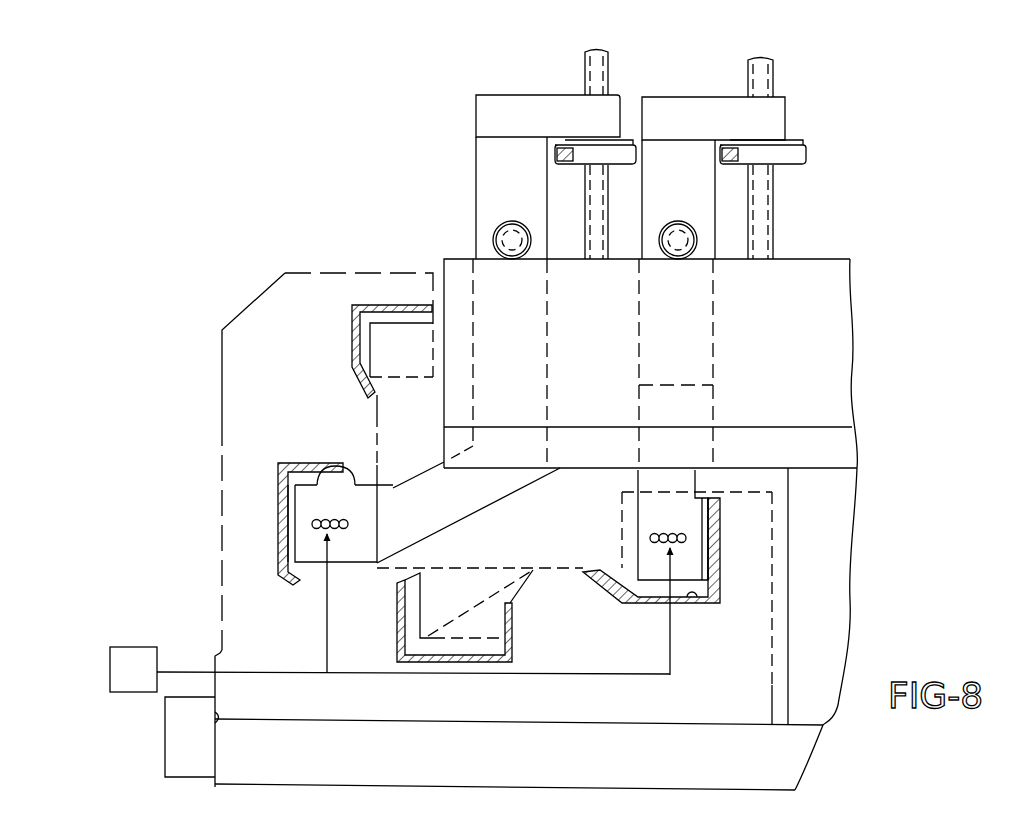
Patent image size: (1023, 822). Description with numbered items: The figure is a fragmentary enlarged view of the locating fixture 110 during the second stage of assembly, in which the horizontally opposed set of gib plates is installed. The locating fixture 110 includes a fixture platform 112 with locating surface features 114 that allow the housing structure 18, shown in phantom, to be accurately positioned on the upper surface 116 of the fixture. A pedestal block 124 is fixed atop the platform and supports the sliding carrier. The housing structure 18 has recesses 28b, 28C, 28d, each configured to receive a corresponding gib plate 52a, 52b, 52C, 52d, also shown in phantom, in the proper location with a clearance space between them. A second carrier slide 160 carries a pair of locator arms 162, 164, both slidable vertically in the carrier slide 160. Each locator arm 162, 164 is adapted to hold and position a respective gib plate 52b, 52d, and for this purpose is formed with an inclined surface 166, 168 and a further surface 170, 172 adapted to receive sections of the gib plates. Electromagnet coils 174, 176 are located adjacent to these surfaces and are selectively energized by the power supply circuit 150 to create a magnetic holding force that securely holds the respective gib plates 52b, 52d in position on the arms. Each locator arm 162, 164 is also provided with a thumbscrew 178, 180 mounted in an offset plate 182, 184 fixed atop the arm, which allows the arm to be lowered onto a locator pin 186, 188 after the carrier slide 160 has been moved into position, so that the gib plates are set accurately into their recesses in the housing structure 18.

The housing structure 18 is at (255, 300).
The recess 28b is at (283, 478).
The recess 28C is at (360, 343).
The recess 28d is at (692, 600).
The gib plate 52a is at (470, 613).
The gib plate 52b is at (283, 460).
The gib plate 52C is at (380, 306).
The gib plate 52d is at (660, 588).
The locating fixture 110 is at (285, 795).
The fixture platform 112 is at (445, 789).
The locating surface features 114 is at (218, 715).
The upper surface 116 is at (400, 720).
The pedestal block 124 is at (830, 569).
The power supply circuit 150 is at (195, 613).
The second carrier slide 160 is at (808, 272).
The locator arm 162 is at (480, 150).
The locator arm 164 is at (705, 230).
The inclined surface 166 is at (293, 522).
The inclined surface 168 is at (716, 528).
The surface 170 is at (320, 468).
The surface 172 is at (665, 578).
The electromagnet coil 174 is at (357, 517).
The electromagnet coil 176 is at (650, 532).
The thumbscrew 178 is at (625, 141).
The thumbscrew 180 is at (805, 151).
The offset plate 182 is at (497, 102).
The offset plate 184 is at (716, 80).
The locator pin 186 is at (512, 222).
The locator pin 188 is at (678, 222).